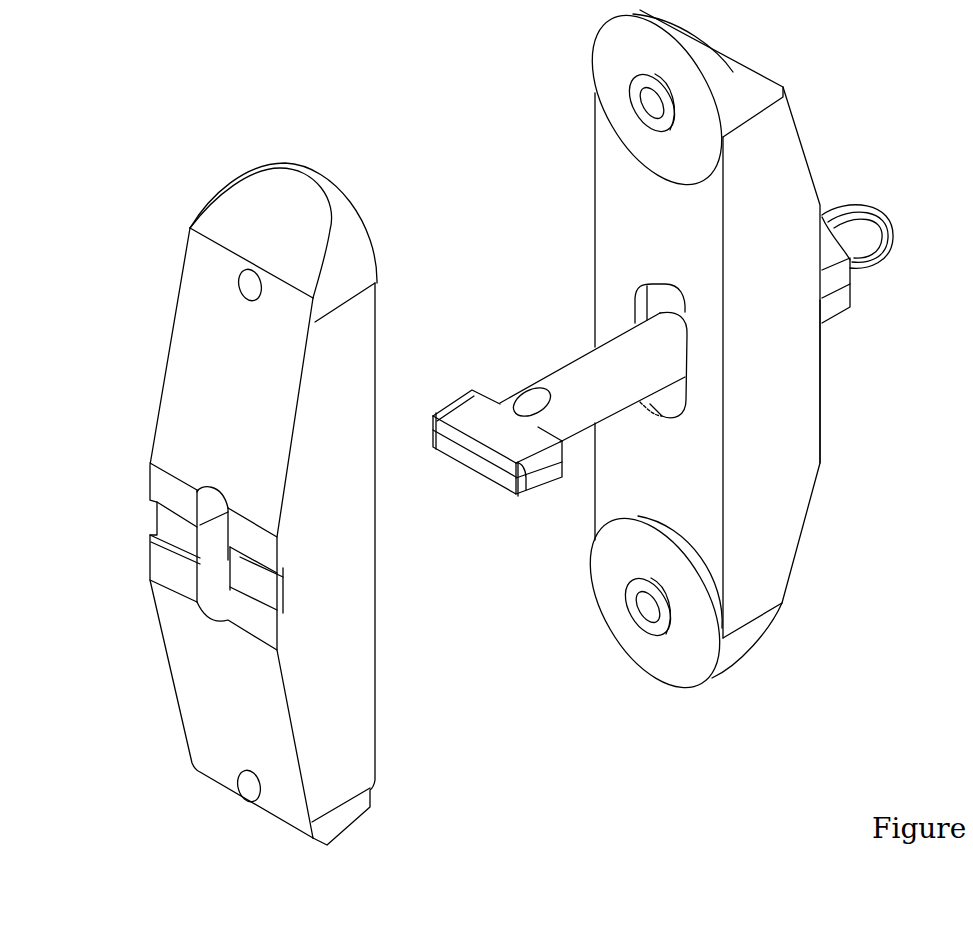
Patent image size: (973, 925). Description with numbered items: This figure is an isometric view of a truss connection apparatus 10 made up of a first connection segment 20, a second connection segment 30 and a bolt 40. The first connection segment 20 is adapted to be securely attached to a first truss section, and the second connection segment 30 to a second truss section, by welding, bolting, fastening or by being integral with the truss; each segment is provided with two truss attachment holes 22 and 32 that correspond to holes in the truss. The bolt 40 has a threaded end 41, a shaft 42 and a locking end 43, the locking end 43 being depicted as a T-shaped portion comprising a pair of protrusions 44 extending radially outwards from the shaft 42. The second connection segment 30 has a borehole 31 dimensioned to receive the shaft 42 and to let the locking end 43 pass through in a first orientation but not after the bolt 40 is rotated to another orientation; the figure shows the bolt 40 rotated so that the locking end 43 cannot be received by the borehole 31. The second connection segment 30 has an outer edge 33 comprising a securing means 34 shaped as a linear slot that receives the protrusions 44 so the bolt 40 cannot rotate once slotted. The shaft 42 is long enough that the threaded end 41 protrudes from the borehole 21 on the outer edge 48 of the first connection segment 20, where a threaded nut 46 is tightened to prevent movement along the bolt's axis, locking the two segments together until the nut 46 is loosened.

The truss connection apparatus 10 is at (530, 765).
The first connection segment 20 is at (702, 355).
The borehole 21 is at (676, 283).
The truss attachment holes 22 is at (645, 103).
The second connection segment 30 is at (221, 504).
The borehole 31 is at (230, 560).
The truss attachment holes 32 is at (246, 287).
The outer edge 33 is at (172, 487).
The securing means 34 is at (170, 526).
The bolt 40 is at (565, 357).
The threaded end 41 is at (840, 227).
The shaft 42 is at (593, 377).
The locking end 43 is at (477, 457).
The protrusions 44 is at (452, 402).
The threaded nut 46 is at (832, 292).
The outer edge 48 is at (820, 387).